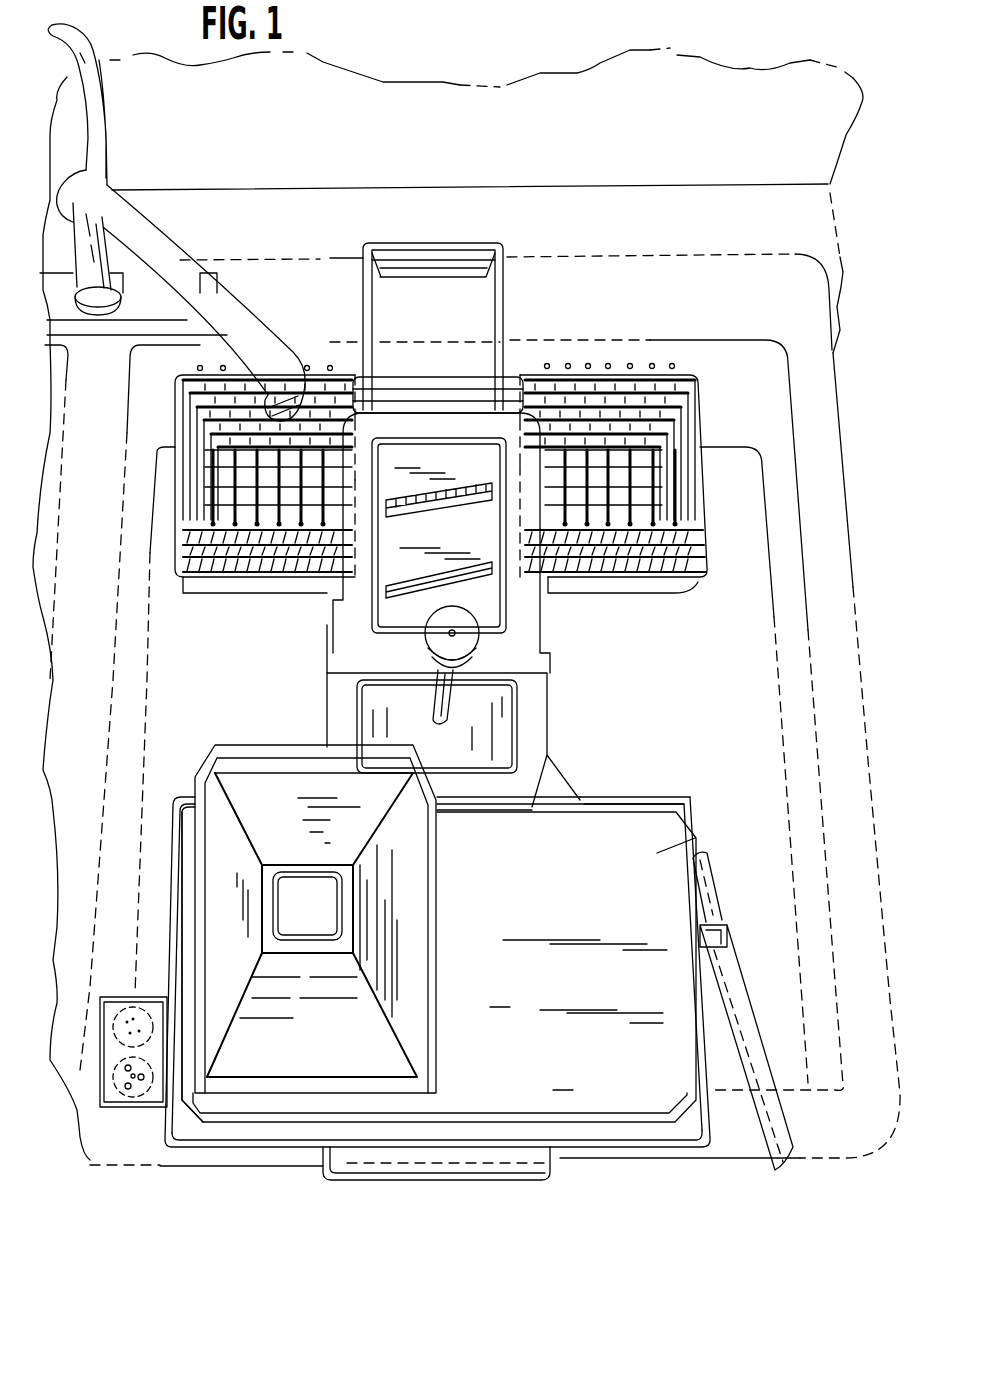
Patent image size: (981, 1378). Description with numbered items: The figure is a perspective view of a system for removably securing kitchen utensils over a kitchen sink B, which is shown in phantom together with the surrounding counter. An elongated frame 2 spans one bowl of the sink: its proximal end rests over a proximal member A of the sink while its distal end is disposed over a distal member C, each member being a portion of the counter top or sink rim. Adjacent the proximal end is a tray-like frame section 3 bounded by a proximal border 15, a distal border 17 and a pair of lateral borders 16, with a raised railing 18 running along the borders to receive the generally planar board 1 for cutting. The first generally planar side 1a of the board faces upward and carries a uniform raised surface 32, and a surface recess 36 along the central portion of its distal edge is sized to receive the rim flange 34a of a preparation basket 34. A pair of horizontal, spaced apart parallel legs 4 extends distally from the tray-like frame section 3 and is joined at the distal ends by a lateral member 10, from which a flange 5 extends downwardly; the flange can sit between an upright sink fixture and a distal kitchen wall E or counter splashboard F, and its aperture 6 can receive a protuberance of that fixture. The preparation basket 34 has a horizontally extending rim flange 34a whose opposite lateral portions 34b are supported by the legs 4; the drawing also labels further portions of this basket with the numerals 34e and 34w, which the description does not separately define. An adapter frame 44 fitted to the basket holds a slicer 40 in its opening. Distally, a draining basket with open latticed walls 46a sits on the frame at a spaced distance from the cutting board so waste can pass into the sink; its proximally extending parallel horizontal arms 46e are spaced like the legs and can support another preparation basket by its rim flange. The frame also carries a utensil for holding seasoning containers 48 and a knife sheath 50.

The generally planar board for cutting 1 is at (673, 805).
The first generally planar side 1a is at (439, 964).
The elongated frame 2 is at (508, 281).
The tray-like frame section 3 is at (168, 797).
The horizontal spaced apart parallel legs 4 is at (363, 312).
The flange 5 is at (450, 279).
The aperture 6 is at (474, 263).
The lateral member 10 is at (440, 245).
The proximal border 15 is at (607, 1145).
The lateral borders 16 is at (158, 1130).
The distal border 17 is at (591, 794).
The raised railing 18 is at (655, 797).
The uniform raised surface 32 is at (660, 853).
The preparation basket 34 is at (240, 744).
The rim flange 34a is at (432, 882).
The opposite lateral portions 34b is at (193, 833).
The cover edge 34e is at (190, 852).
The cover window 34w is at (297, 753).
The surface recess 36 is at (553, 790).
The slicer 40 is at (482, 615).
The adapter frame 44 is at (527, 608).
The open latticed walls 46a is at (410, 386).
The proximally extending parallel horizontal arms 46e is at (333, 615).
The utensil for holding seasoning containers 48 is at (135, 1000).
The knife sheath 50 is at (715, 873).
The proximal member of the kitchen sink A is at (228, 1167).
The kitchen sink B is at (843, 453).
The distal member of the kitchen sink C is at (846, 263).
The distal kitchen wall E is at (812, 128).
The counter splashboard F is at (815, 213).